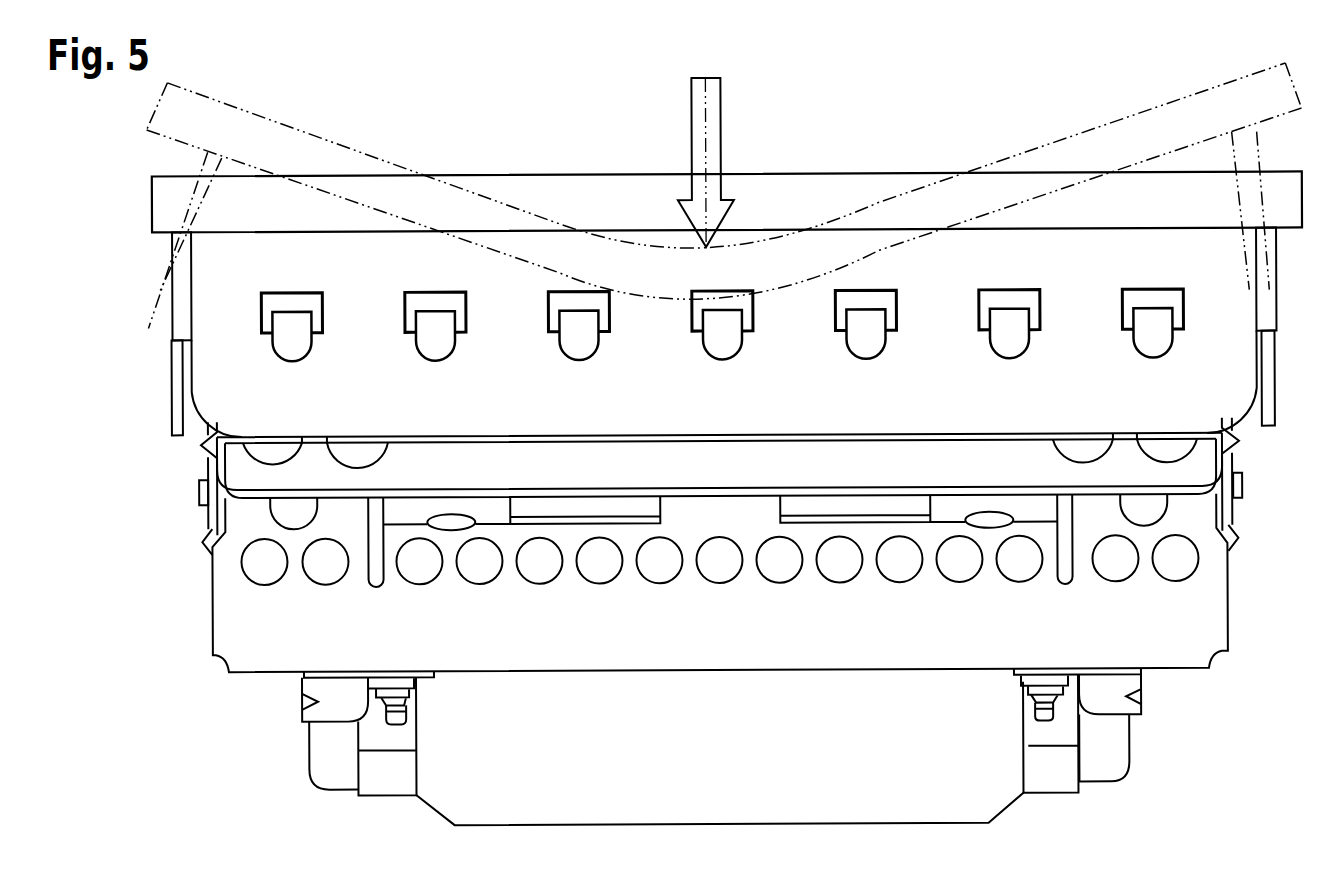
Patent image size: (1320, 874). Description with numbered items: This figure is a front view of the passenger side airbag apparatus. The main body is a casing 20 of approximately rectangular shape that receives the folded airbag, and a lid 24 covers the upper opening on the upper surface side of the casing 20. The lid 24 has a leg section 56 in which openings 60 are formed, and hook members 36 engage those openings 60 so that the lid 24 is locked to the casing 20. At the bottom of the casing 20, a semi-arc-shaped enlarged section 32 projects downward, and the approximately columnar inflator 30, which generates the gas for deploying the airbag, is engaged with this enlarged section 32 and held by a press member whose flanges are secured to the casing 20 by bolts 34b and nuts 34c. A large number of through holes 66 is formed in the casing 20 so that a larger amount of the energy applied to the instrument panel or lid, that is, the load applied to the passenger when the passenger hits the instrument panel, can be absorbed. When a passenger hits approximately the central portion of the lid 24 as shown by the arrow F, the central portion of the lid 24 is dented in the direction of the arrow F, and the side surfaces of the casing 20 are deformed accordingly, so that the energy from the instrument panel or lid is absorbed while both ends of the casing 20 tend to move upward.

The casing 20 is at (262, 657).
The lid 24 is at (857, 160).
The inflator 30 is at (320, 755).
The enlarged section 32 is at (626, 826).
The bolts 34b is at (407, 707).
The nuts 34c is at (413, 692).
The hook members 36 is at (300, 343).
The leg section 56 is at (955, 405).
The openings 60 is at (288, 298).
The through holes 66 is at (665, 566).
The arrow F is at (723, 125).